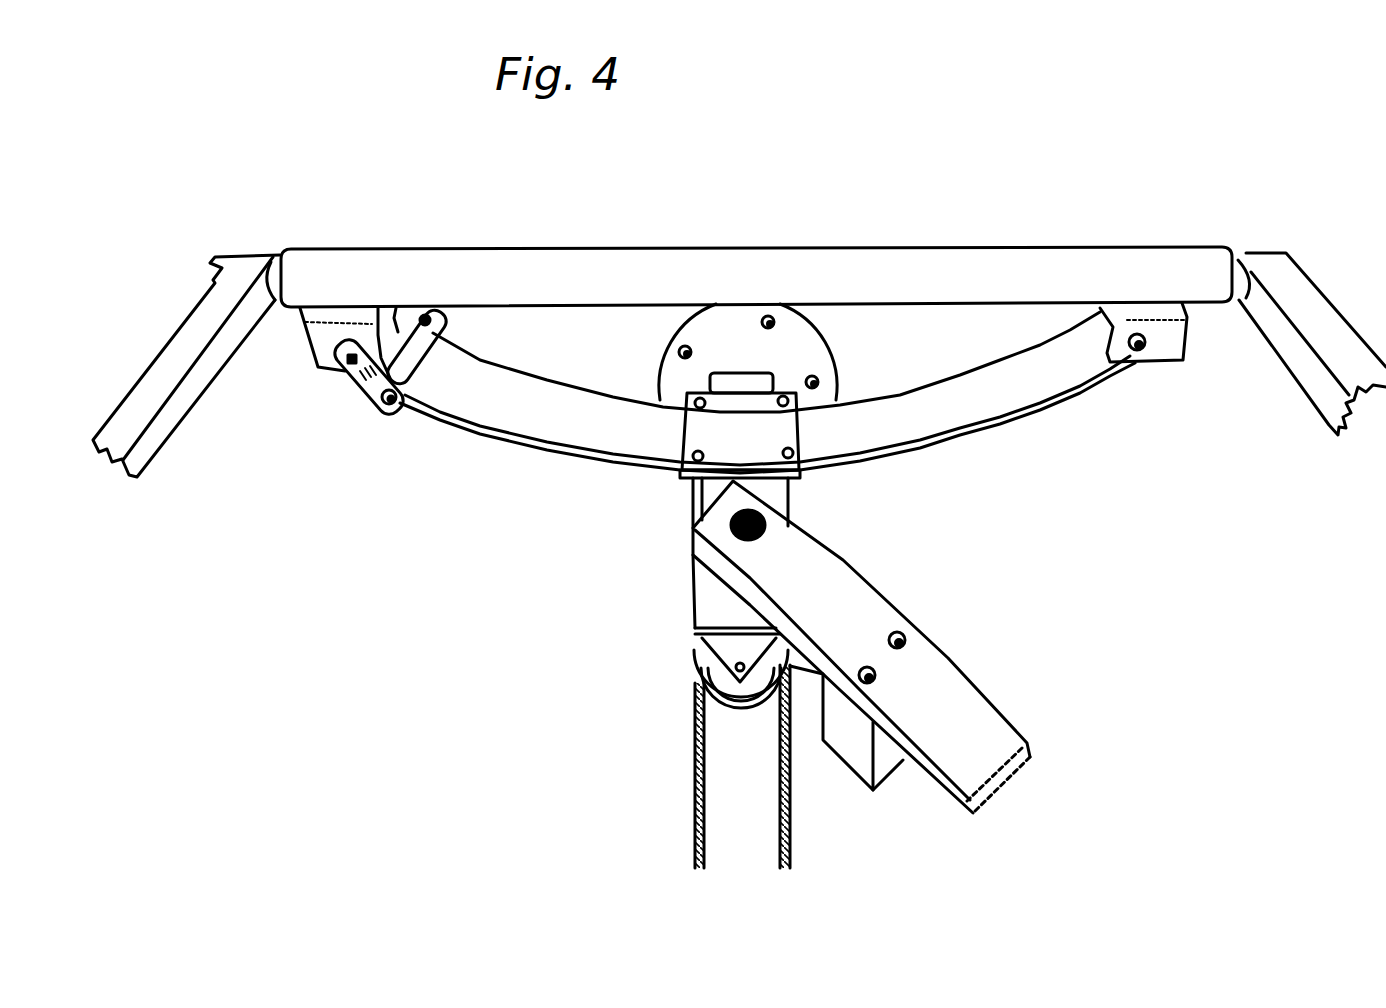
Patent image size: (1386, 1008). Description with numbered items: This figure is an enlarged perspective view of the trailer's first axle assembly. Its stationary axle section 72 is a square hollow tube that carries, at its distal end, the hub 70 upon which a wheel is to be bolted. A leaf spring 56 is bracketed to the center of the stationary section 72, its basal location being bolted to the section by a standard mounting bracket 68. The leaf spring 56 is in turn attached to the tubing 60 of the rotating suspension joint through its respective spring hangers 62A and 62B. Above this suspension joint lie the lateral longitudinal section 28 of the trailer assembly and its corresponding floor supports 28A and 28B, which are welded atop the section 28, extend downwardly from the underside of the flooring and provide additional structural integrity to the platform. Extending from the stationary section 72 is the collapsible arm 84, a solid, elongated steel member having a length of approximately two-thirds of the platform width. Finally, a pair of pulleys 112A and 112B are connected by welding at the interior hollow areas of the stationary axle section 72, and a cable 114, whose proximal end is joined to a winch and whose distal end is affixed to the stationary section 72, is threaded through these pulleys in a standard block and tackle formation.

The tubing of the rotating suspension joint 60 is at (990, 244).
The lateral longitudinal section 28 is at (1243, 249).
The floor support 28A is at (170, 427).
The floor support 28B is at (1336, 417).
The spring hanger 62A is at (320, 370).
The spring hanger 62B is at (1170, 361).
The leaf spring 56 is at (1037, 407).
The hub 70 is at (827, 355).
The mounting bracket 68 is at (800, 476).
The stationary section of the axle 72 is at (703, 592).
The collapsible arm 84 is at (967, 690).
The pulley 112A is at (700, 653).
The pulley 112B is at (737, 720).
The cable 114 is at (793, 852).